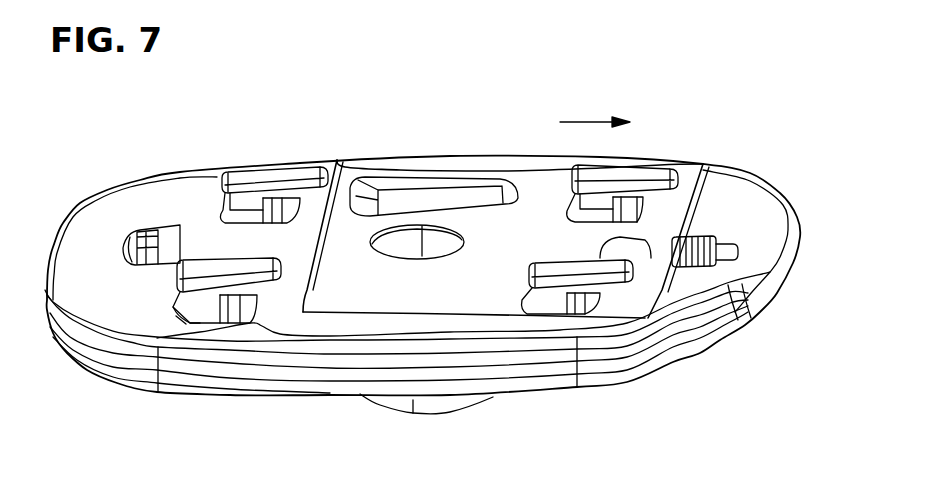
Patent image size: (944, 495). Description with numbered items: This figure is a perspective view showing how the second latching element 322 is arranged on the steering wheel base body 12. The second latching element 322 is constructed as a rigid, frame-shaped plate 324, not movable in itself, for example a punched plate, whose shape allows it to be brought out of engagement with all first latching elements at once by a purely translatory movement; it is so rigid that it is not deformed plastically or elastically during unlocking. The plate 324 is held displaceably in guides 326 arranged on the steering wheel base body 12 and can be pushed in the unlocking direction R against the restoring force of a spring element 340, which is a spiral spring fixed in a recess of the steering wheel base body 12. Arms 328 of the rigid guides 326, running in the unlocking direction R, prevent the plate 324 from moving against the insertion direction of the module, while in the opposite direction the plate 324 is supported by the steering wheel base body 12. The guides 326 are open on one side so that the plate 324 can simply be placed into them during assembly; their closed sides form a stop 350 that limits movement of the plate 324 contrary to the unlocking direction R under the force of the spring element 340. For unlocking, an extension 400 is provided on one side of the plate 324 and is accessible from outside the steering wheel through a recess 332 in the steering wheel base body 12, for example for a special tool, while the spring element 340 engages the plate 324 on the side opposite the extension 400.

The steering wheel base body 12 is at (287, 375).
The second latching element 322 is at (496, 116).
The plate 324 is at (313, 233).
The guides 326 is at (603, 200).
The arms 328 is at (290, 173).
The recess 332 is at (140, 236).
The spring element 340 is at (718, 268).
The stop 350 is at (237, 322).
The extension 400 is at (193, 237).
The unlocking direction R is at (573, 122).